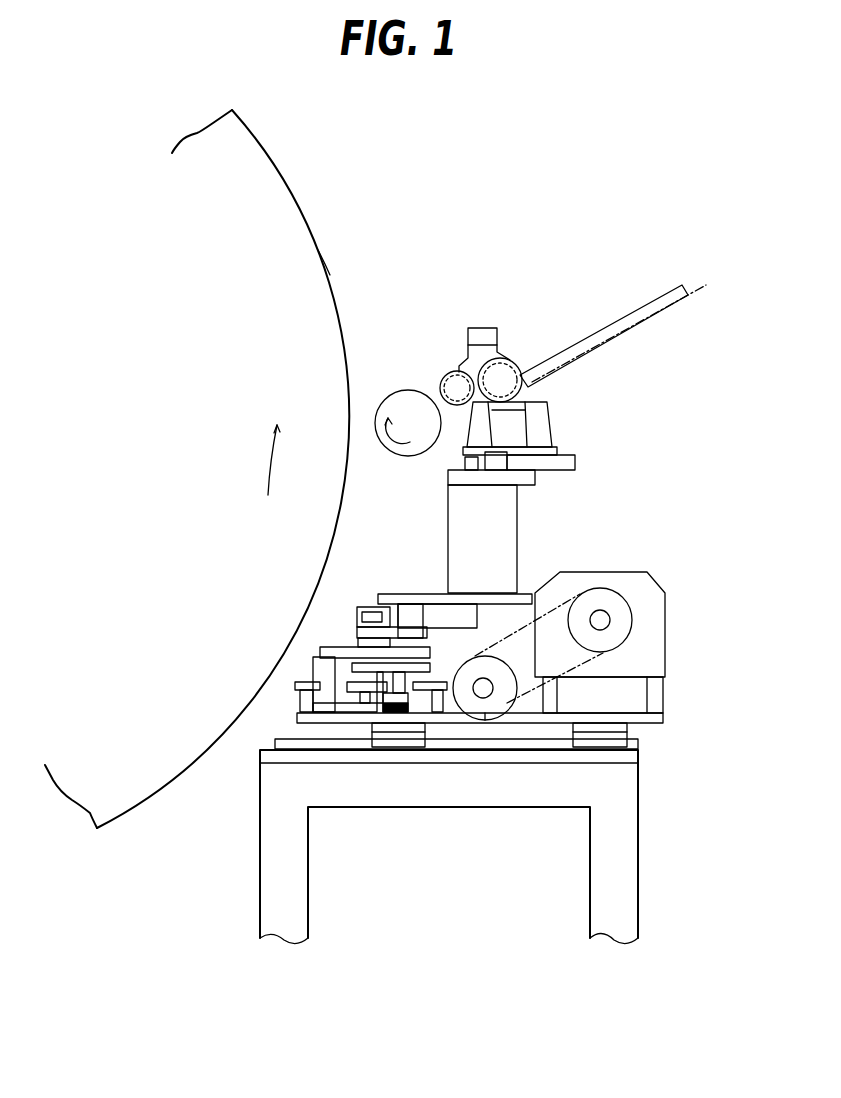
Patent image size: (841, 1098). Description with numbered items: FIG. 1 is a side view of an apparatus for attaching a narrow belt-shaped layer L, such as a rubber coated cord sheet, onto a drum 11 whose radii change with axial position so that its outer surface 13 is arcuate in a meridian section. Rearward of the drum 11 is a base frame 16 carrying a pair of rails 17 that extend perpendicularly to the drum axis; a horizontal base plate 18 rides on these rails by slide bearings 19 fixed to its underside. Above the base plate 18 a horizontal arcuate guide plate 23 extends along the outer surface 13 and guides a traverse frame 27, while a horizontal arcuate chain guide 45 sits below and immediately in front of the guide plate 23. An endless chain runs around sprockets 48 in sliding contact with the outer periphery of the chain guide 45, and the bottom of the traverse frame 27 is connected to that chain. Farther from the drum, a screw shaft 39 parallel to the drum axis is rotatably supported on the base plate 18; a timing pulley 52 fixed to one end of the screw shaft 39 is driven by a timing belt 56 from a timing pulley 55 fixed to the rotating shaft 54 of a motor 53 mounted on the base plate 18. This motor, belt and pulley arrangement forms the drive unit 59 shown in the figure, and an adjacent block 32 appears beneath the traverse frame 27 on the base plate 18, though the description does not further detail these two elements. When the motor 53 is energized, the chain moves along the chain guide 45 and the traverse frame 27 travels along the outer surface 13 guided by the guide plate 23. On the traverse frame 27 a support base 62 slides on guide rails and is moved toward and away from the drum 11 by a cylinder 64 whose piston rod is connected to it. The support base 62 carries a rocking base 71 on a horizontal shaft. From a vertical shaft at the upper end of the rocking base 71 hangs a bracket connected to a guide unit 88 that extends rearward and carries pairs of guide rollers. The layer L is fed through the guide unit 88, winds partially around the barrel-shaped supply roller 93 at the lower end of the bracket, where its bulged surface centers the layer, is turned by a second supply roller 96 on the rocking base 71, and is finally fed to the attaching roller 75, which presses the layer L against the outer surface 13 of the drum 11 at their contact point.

The drum 11 is at (273, 168).
The outer surface 13 is at (318, 250).
The base frame 16 is at (298, 890).
The rails 17 is at (277, 742).
The base plate 18 is at (657, 723).
The slide bearings 19 is at (404, 745).
The arcuate guide plate 23 is at (390, 653).
The traverse frame 27 is at (505, 515).
The slide block 32 is at (437, 610).
The screw shaft 39 is at (483, 686).
The arcuate chain guide 45 is at (347, 683).
The sprockets 48 is at (297, 683).
The timing pulley 52 is at (498, 720).
The motor 53 is at (627, 580).
The rotating shaft 54 is at (600, 618).
The timing pulley 55 is at (625, 617).
The timing belt 56 is at (597, 667).
The drive unit 59 is at (590, 603).
The support base 62 is at (557, 447).
The cylinder 64 is at (567, 463).
The rocking base 71 is at (468, 354).
The attaching roller 75 is at (393, 401).
The guide unit 88 is at (625, 336).
The supply roller 93 is at (513, 373).
The supply roller 96 is at (438, 379).
The layer L is at (705, 284).